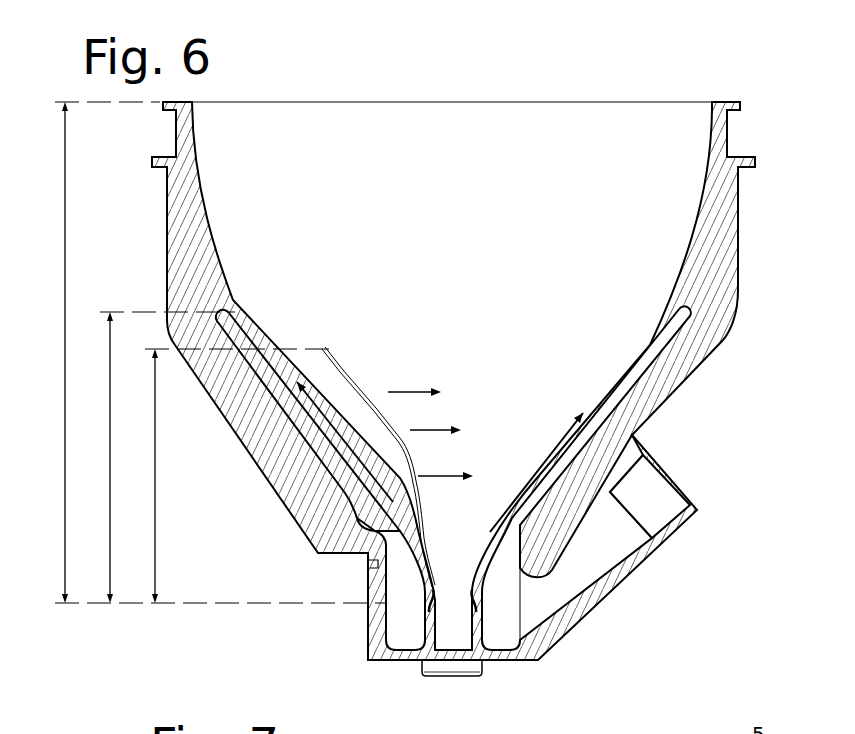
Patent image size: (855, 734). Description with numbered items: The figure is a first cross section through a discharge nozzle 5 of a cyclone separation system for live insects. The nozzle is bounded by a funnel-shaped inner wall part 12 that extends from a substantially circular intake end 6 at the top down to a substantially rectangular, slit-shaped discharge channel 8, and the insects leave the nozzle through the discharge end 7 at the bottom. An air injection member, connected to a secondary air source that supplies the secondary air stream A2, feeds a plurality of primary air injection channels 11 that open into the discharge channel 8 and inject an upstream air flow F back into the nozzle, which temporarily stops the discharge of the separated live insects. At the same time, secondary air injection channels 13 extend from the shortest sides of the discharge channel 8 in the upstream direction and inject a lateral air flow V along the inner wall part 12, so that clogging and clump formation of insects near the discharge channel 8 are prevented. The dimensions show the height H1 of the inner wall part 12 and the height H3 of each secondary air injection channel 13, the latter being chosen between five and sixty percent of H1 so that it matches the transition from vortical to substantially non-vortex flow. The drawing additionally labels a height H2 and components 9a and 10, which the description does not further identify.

The discharge nozzle 5 is at (742, 55).
The intake end 6 is at (738, 102).
The discharge end 7 is at (517, 661).
The discharge channel 8 is at (453, 648).
The boss with square channel 9a is at (698, 510).
The deflector flaps 10 is at (320, 453).
The primary air injection channels 11 is at (472, 588).
The inner wall part 12 is at (240, 300).
The secondary air injection channels 13 is at (337, 360).
The secondary air stream A2 is at (655, 488).
The upstream air flow F is at (359, 436).
The lateral air flow V is at (405, 392).
The height of the inner wall part H1 is at (63, 338).
The height H2 is at (108, 448).
The height of the secondary air injection channel H3 is at (153, 465).